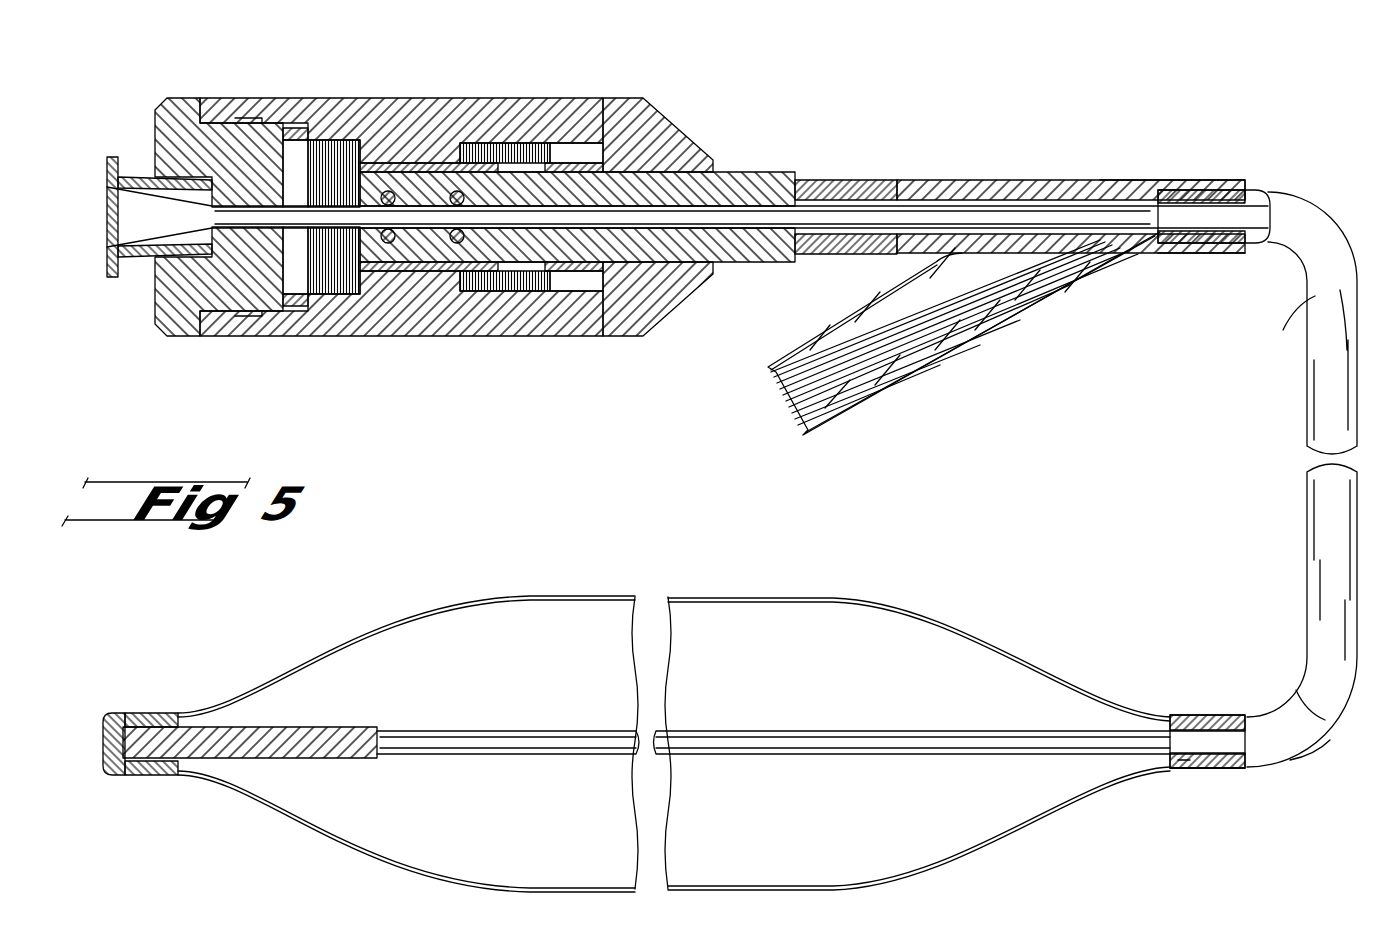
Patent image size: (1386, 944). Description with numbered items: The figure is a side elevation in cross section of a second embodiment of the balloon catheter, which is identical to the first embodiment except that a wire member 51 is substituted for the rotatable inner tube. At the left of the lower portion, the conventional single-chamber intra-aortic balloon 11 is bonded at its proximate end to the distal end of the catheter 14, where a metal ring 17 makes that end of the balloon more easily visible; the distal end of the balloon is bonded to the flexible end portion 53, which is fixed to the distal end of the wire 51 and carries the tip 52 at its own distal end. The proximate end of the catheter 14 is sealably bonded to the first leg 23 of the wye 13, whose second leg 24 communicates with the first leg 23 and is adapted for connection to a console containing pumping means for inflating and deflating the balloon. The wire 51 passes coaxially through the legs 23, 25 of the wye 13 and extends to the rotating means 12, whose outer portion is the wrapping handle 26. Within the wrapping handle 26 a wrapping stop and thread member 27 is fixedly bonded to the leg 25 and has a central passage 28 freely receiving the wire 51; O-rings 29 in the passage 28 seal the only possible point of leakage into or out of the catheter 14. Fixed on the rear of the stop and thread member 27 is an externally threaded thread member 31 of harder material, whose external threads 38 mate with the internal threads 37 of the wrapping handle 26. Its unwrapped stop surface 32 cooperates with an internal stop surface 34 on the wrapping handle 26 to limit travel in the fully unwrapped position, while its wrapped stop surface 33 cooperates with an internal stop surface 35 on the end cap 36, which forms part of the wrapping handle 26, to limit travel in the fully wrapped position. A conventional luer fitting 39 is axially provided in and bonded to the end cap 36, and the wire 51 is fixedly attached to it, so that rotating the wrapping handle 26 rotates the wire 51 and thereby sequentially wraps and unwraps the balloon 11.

The intra-aortic balloon 11 is at (674, 716).
The rotating means 12 is at (676, 231).
The wye 13 is at (1125, 180).
The catheter 14 is at (1252, 192).
The metal ring 17 is at (1185, 768).
The first leg 23 is at (1208, 253).
The second leg 24 is at (992, 316).
The leg 25 is at (1003, 190).
The wrapping handle 26 is at (686, 308).
The wrapping stop and thread member 27 is at (765, 172).
The central passage 28 is at (915, 180).
The O-rings 29 is at (455, 244).
The externally threaded thread member 31 is at (432, 140).
The unwrapped stop surface 32 is at (605, 150).
The wrapped stop surface 33 is at (292, 128).
The internal stop surface 34 is at (585, 291).
The internal stop surface 35 is at (294, 300).
The end cap 36 is at (190, 332).
The internal threads 37 is at (553, 143).
The external threads 38 is at (346, 140).
The luer fitting 39 is at (135, 272).
The wire member 51 is at (1280, 206).
The tip 52 is at (110, 713).
The flexible end portion 53 is at (285, 727).